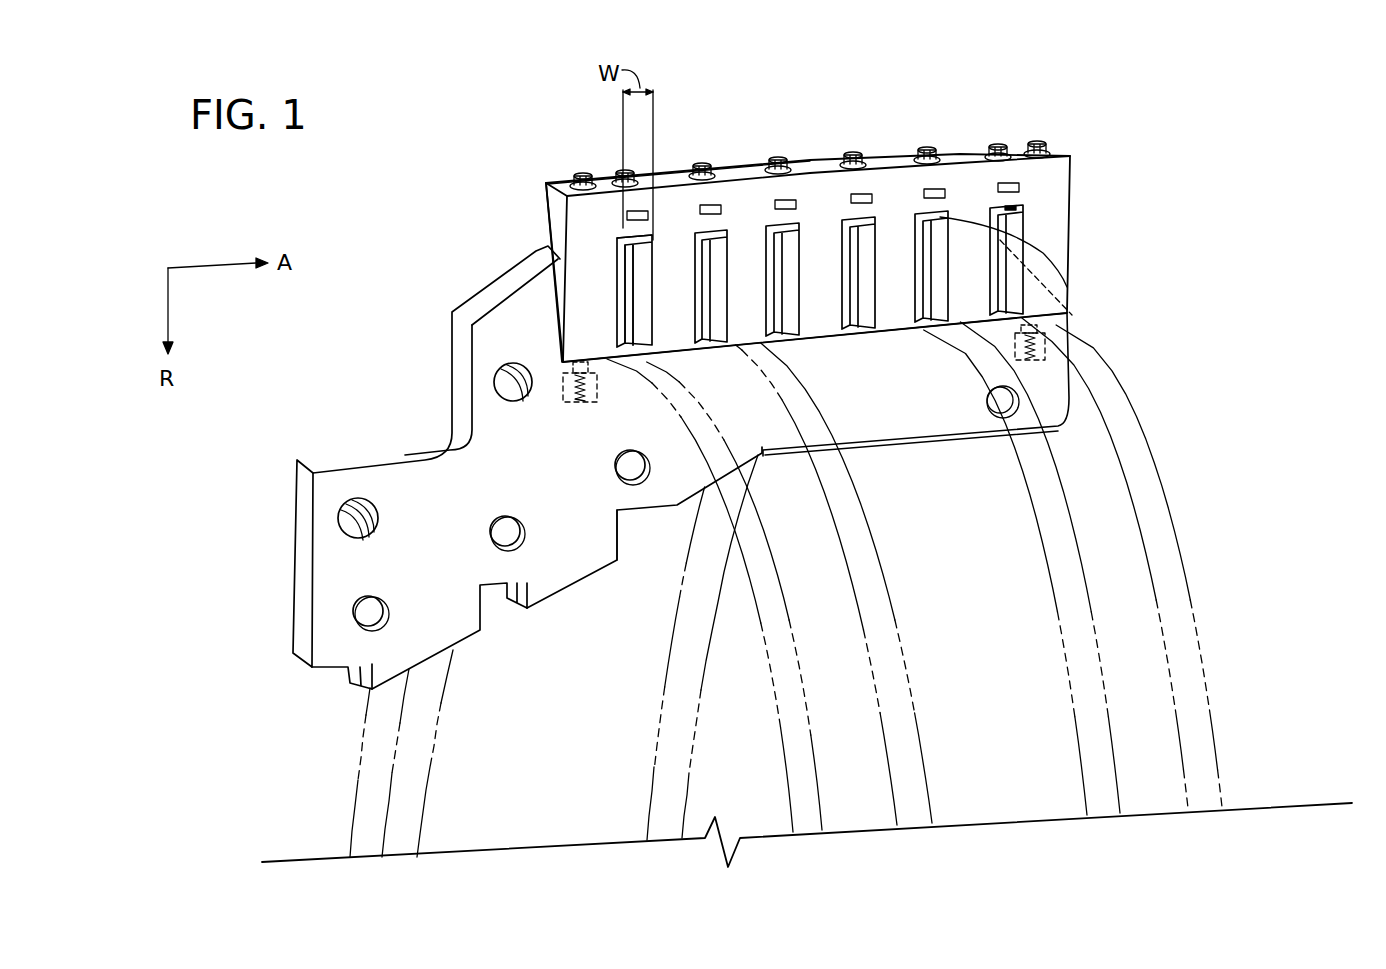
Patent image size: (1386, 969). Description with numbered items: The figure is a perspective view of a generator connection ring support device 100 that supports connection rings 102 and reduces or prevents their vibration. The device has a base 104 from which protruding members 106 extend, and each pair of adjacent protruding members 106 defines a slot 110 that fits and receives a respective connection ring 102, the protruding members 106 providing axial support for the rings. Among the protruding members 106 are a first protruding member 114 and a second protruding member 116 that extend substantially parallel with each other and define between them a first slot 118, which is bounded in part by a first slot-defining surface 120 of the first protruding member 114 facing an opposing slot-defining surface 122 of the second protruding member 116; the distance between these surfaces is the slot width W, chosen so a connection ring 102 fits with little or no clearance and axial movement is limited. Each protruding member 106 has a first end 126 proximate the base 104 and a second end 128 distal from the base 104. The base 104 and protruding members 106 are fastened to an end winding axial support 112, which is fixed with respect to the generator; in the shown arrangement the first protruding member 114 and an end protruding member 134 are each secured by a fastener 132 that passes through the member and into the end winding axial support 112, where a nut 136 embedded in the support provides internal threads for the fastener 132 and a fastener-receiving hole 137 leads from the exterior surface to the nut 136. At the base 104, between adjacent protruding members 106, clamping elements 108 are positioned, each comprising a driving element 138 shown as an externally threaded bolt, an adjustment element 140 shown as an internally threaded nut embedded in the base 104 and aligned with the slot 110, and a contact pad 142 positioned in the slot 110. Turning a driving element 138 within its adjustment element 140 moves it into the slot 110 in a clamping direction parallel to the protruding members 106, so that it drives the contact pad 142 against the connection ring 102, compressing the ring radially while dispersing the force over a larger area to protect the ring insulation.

The generator connection ring support device 100 is at (1130, 66).
The connection rings 102 is at (1158, 530).
The base 104 is at (819, 221).
The protruding members 106 is at (761, 453).
The clamping element 108 is at (811, 133).
The slot 110 is at (920, 248).
The end winding axial support 112 is at (1072, 403).
The first protruding member 114 is at (576, 328).
The second protruding member 116 is at (667, 330).
The first slot 118 is at (622, 258).
The first slot-defining surface 120 is at (617, 286).
The opposing slot-defining surface 122 is at (633, 306).
The first end 126 is at (1073, 193).
The second end 128 is at (1070, 315).
The fastener 132 is at (583, 174).
The end protruding member 134 is at (1069, 279).
The fastening element (nut) 136 is at (563, 402).
The fastener-receiving hole 137 is at (562, 363).
The driving element 138 is at (702, 170).
The adjustment element 140 is at (1008, 181).
The contact pad 142 is at (1014, 208).